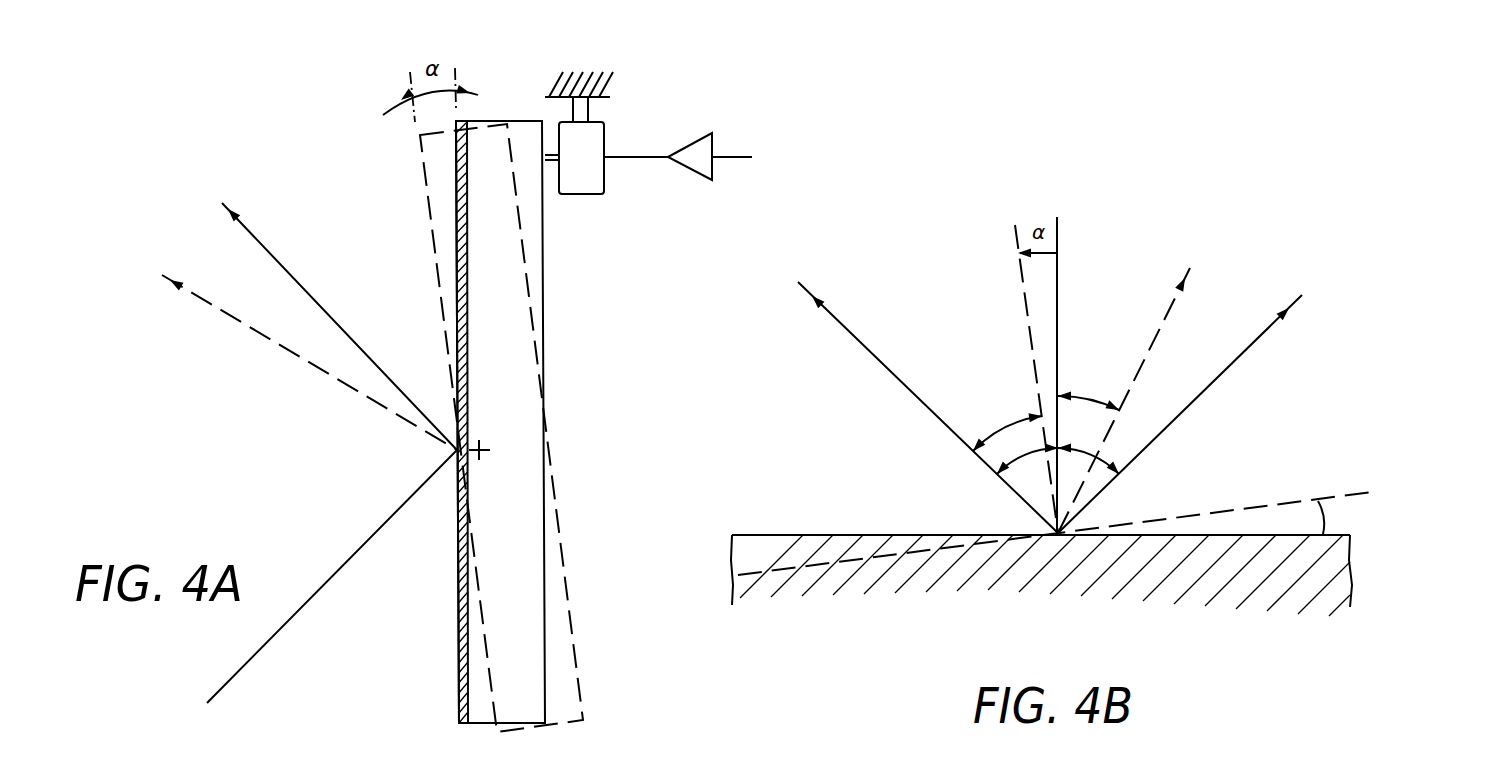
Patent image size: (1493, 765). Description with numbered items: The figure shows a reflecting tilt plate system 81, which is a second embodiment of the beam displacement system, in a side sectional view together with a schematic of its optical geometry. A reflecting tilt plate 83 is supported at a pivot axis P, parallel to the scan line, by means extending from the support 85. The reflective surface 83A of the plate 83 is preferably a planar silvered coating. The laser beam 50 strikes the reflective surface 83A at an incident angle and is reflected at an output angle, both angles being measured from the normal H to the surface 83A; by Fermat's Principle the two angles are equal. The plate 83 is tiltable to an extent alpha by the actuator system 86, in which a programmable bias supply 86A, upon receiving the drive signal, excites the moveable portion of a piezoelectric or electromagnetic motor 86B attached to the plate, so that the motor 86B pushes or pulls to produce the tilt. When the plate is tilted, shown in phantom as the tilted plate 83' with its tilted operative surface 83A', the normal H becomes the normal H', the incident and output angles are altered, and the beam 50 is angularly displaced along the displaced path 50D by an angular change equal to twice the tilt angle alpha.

In FIG. 4A, the reflecting tilt plate system 81 is at (300, 99).
In FIG. 4A, the reflecting tilt plate 83 is at (539, 422).
In FIG. 4B, the reflecting tilt plate 83 is at (1092, 587).
In FIG. 4A, the tilted plate 83' is at (533, 428).
In FIG. 4A, the reflective surface 83A is at (400, 438).
In FIG. 4B, the reflective surface 83A is at (1087, 517).
In FIG. 4B, the tilted operative surface 83A' is at (1077, 507).
In FIG. 4A, the support 85 is at (600, 98).
In FIG. 4A, the actuator system 86 is at (742, 202).
In FIG. 4A, the programmable bias supply 86A is at (713, 136).
In FIG. 4A, the motor 86B is at (604, 194).
In FIG. 4A, the laser beam 50 is at (310, 295).
In FIG. 4B, the laser beam 50 is at (848, 331).
In FIG. 4A, the deflected light beam 50D is at (243, 320).
In FIG. 4B, the deflected light beam 50D is at (1188, 296).
In FIG. 4A, the pivot axis P is at (500, 430).
In FIG. 4B, the normal H is at (1070, 375).
In FIG. 4B, the normal to tilted surface H' is at (1024, 379).